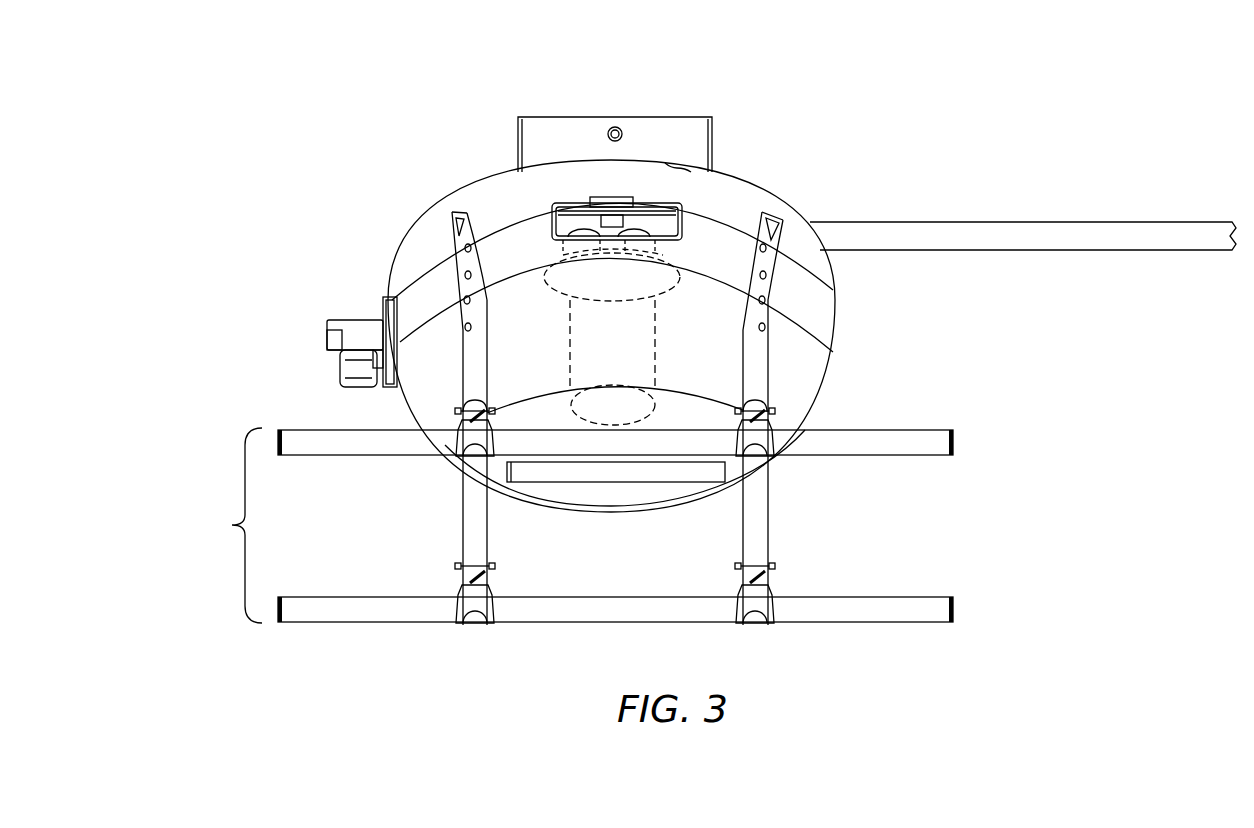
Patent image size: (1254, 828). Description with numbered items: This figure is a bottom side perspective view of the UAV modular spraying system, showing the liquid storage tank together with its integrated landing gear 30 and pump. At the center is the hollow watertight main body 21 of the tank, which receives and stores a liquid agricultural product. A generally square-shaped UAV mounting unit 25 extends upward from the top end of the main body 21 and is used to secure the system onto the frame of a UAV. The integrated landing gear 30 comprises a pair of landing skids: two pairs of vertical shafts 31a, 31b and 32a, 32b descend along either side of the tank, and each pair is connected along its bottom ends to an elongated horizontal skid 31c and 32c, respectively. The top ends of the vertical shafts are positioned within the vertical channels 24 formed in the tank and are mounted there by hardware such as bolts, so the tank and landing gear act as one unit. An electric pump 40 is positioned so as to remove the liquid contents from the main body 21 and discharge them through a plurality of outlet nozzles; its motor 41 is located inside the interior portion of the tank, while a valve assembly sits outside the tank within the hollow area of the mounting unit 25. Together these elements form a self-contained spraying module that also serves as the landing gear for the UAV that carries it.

The UAV mounting unit 25 is at (657, 118).
The vertical channels 24 is at (457, 237).
The vertical shaft 32a is at (473, 317).
The vertical shaft 32b is at (760, 360).
The elongated horizontal skid 32c is at (923, 443).
The vertical shaft 31a is at (473, 527).
The vertical shaft 31b is at (755, 525).
The elongated horizontal skid 31c is at (913, 612).
The integrated landing gear 30 is at (226, 525).
The electric pump 40 is at (641, 252).
The motor 41 is at (639, 319).
The main body 21 is at (647, 496).